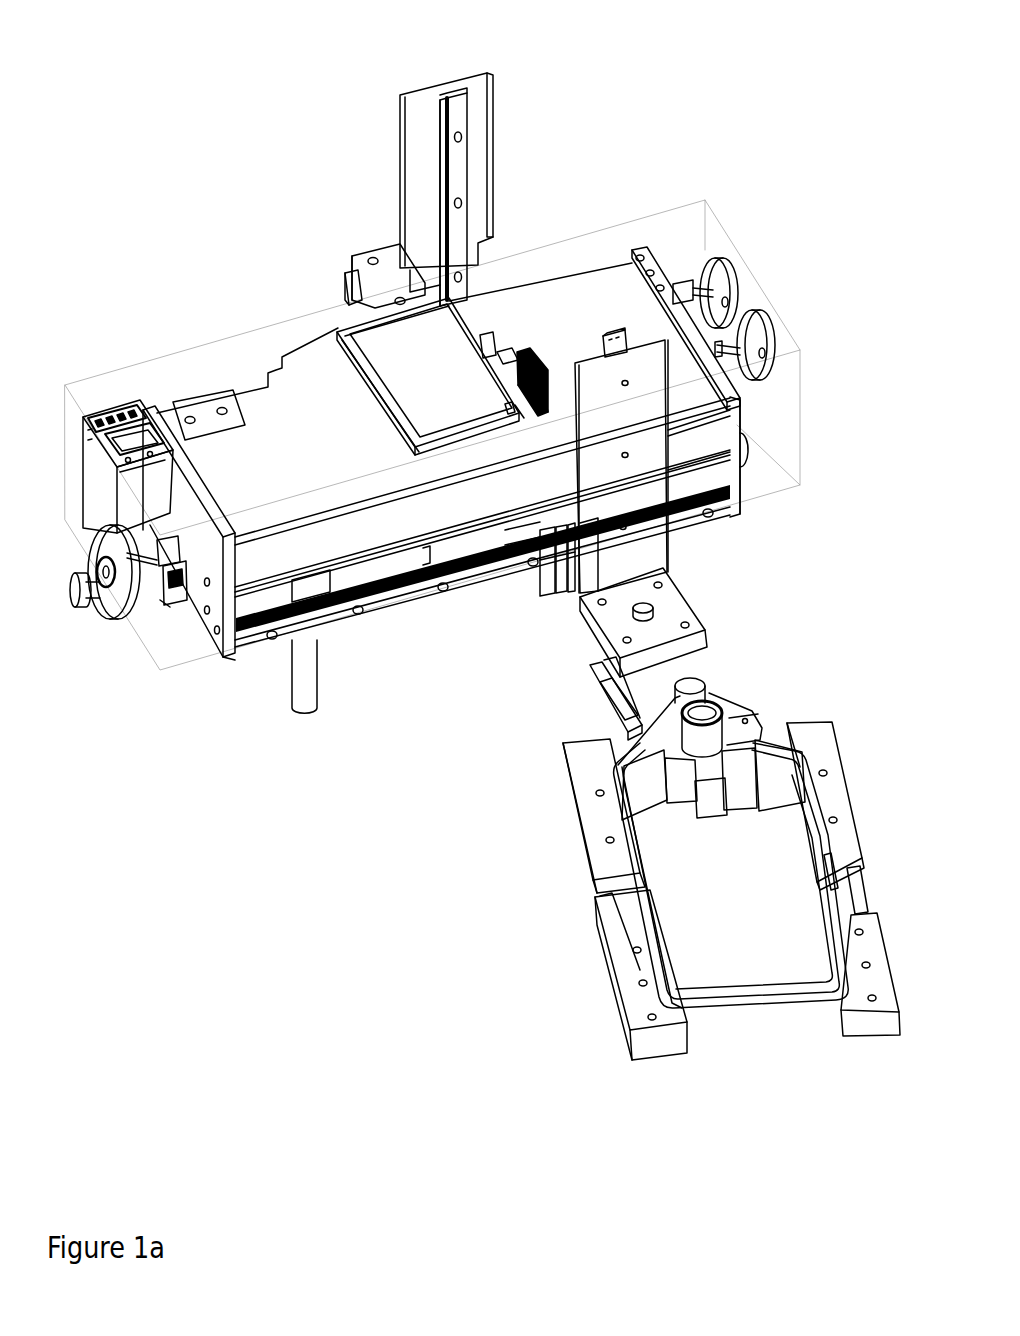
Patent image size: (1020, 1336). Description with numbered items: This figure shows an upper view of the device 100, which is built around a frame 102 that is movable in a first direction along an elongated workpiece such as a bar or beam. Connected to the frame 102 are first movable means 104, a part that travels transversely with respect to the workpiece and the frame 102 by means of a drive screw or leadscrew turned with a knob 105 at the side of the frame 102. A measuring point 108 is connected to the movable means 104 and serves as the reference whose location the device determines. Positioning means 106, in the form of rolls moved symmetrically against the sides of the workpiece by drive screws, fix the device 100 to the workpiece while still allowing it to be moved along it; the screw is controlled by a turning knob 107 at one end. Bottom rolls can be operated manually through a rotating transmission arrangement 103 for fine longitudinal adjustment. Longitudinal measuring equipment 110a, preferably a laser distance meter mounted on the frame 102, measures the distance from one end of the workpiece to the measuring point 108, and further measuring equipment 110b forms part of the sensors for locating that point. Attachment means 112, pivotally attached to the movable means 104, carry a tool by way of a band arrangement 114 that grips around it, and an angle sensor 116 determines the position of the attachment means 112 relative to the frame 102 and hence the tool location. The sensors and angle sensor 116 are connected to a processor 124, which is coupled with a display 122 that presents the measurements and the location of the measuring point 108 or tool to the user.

The device 100 is at (152, 101).
The frame 102 is at (282, 367).
The rotating transmission arrangement 103 is at (707, 262).
The first movable means 104 is at (487, 115).
The knob 105 is at (753, 337).
The positioning means 106 is at (308, 687).
The turning knob 107 is at (118, 612).
The measuring point 108 is at (633, 613).
The longitudinal measuring equipment 110a is at (122, 407).
The measuring equipment 110b is at (170, 590).
The attachment means 112 is at (630, 1013).
The band arrangement 114 is at (787, 1017).
The angle sensor 116 is at (690, 683).
The display 122 is at (397, 330).
The processor 124 is at (513, 350).